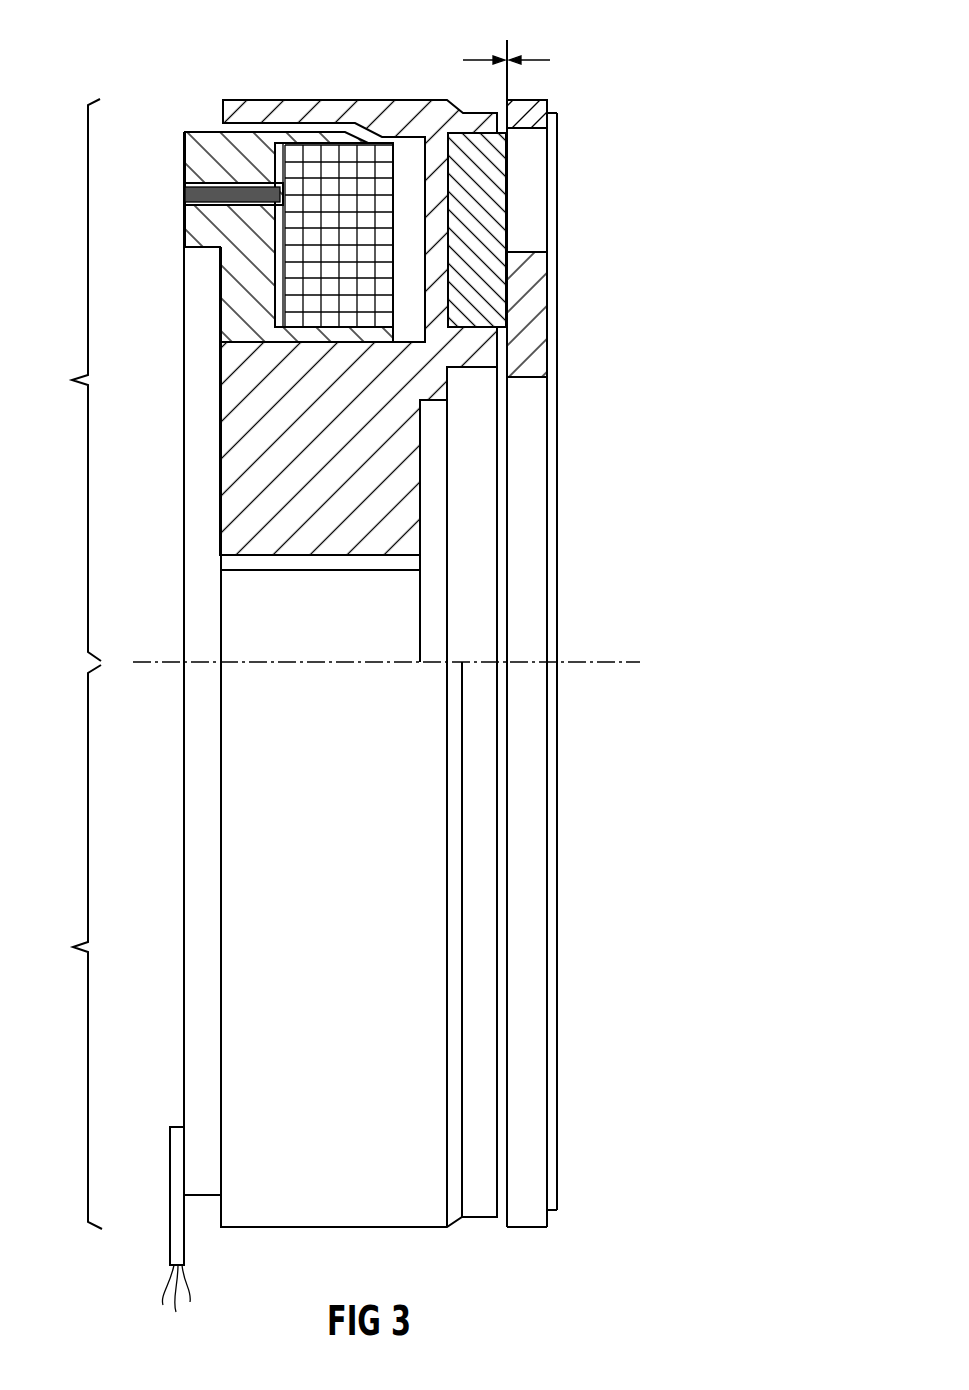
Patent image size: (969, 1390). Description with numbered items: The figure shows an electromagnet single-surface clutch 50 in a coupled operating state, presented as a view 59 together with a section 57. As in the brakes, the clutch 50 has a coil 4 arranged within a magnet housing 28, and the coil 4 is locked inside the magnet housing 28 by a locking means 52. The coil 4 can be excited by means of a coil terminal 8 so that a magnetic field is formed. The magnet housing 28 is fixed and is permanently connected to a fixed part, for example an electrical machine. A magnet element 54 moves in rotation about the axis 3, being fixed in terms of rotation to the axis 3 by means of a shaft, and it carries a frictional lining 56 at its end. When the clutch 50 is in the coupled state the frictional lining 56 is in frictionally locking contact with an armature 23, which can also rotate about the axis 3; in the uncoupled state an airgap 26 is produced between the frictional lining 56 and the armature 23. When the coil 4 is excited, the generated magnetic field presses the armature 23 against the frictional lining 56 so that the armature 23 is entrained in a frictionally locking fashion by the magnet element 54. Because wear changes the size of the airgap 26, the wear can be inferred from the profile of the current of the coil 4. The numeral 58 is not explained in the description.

The clutch 50 is at (63, 29).
The axis 3 is at (580, 662).
The coil 4 is at (333, 190).
The coil terminal 8 is at (176, 1165).
The armature 23 is at (525, 308).
The airgap 26 is at (507, 55).
The magnet housing 28 is at (199, 148).
The locking means 52 is at (216, 193).
The magnet element 54 is at (392, 123).
The frictional lining 56 is at (481, 170).
The section 57 is at (68, 380).
The armature disk 58 is at (557, 633).
The view 59 is at (72, 947).